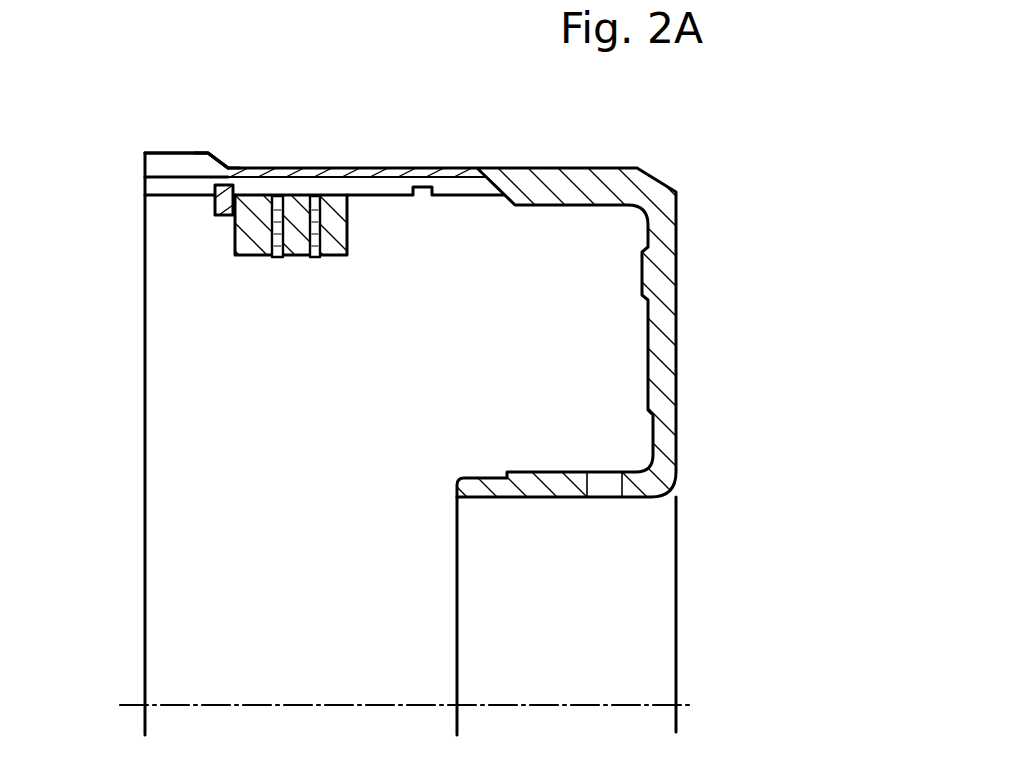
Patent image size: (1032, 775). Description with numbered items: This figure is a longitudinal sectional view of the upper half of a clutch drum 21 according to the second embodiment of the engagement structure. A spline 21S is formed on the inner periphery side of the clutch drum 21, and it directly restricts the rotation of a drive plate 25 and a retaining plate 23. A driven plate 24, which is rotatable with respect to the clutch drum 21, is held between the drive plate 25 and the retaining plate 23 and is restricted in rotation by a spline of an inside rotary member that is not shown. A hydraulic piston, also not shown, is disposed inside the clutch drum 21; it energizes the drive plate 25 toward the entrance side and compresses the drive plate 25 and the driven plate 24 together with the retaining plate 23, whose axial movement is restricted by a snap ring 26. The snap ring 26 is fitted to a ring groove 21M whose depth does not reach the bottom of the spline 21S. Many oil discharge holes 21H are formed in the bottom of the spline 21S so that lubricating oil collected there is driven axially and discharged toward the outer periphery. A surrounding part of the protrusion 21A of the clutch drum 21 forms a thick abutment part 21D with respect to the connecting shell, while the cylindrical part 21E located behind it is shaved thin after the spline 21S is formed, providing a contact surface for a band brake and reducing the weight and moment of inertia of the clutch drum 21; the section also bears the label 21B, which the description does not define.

The clutch drum 21 is at (693, 258).
The protrusion 21A is at (142, 163).
The base portion 21B is at (167, 165).
The spline 21S is at (193, 177).
The ring groove 21M is at (203, 190).
The abutment part 21D is at (208, 153).
The cylindrical part 21E is at (300, 168).
The oil discharge holes 21H is at (250, 168).
The retaining plate 23 is at (253, 257).
The driven plate 24 is at (278, 257).
The drive plate 25 is at (315, 257).
The snap ring 26 is at (221, 216).